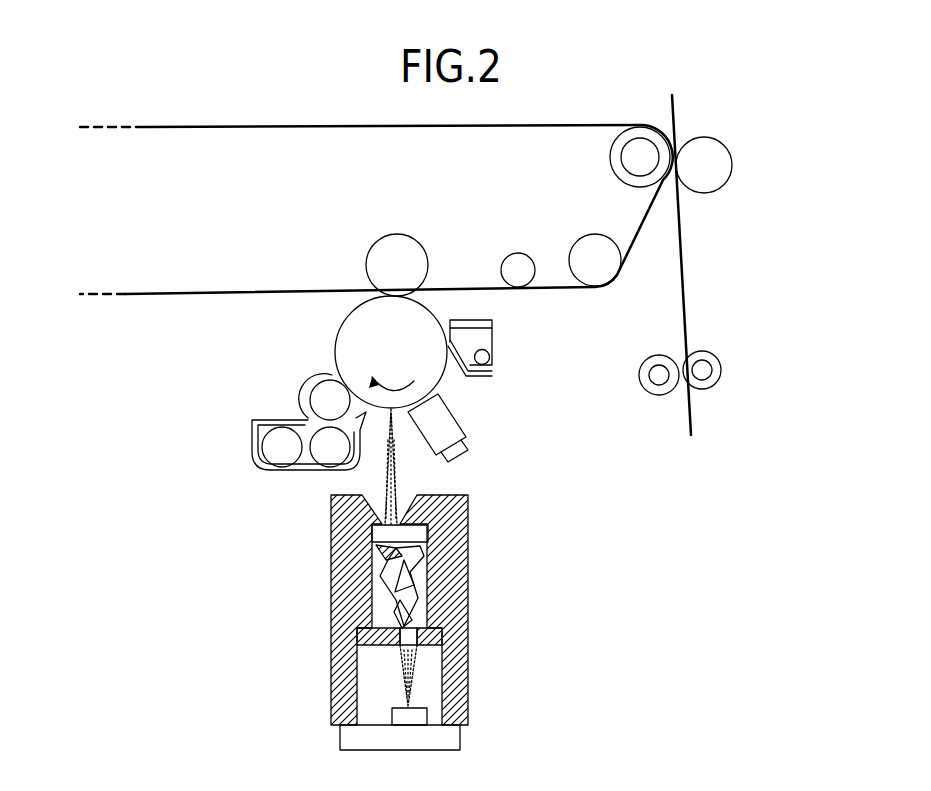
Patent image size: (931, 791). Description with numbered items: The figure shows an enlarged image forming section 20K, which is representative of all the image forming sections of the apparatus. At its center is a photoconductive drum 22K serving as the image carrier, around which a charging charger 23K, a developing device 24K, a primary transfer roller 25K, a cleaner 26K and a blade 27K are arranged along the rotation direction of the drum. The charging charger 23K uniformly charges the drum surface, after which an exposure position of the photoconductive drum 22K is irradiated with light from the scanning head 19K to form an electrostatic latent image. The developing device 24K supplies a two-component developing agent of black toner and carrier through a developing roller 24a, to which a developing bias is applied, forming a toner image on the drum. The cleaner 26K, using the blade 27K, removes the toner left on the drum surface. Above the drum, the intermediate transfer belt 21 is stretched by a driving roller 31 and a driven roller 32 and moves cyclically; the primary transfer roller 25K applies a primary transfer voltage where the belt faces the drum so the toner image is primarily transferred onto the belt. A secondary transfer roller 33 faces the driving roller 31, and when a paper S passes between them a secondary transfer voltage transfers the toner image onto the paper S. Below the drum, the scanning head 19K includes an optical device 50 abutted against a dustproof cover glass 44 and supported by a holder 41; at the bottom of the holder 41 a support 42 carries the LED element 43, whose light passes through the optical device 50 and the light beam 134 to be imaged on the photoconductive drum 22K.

The intermediate transfer belt 21 is at (270, 130).
The driving roller 31 is at (607, 155).
The driven roller 32 is at (570, 247).
The secondary transfer roller 33 is at (735, 173).
The paper S is at (678, 297).
The primary transfer roller 25K is at (391, 232).
The image forming section 20K is at (222, 358).
The photoconductive drum 22K is at (337, 345).
The charging charger 23K is at (446, 428).
The cleaner 26K is at (495, 337).
The blade 27K is at (495, 375).
The developing device 24K is at (252, 437).
The developing roller 24a is at (310, 400).
The scanning head 19K is at (515, 622).
The laser beam 134 is at (473, 478).
The holder 41 is at (467, 670).
The dustproof cover glass 44 is at (428, 532).
The optical device 50 is at (427, 578).
The LED element 43 is at (392, 718).
The support 42 is at (453, 735).